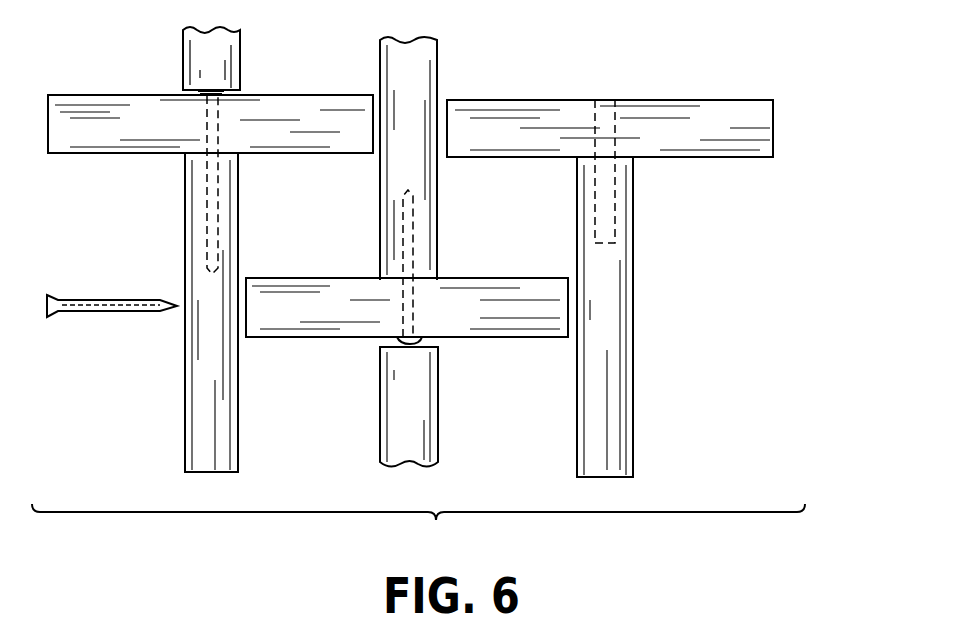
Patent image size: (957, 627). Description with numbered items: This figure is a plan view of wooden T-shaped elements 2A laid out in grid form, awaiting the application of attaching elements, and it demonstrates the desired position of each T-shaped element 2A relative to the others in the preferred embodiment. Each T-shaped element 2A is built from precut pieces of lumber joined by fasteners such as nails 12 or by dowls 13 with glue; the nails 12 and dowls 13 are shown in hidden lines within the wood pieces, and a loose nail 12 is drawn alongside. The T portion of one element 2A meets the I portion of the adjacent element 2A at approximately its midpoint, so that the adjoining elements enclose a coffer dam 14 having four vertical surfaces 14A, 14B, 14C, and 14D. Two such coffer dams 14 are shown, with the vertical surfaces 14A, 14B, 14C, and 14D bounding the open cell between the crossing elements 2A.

The wooden T-shaped element 2A is at (237, 387).
The nails 12 is at (133, 300).
The dowls 13 is at (603, 105).
The coffer dam 14 is at (410, 188).
The vertical surface 14A is at (523, 158).
The vertical surface 14B is at (577, 170).
The vertical surface 14C is at (535, 262).
The vertical surface 14D is at (437, 198).